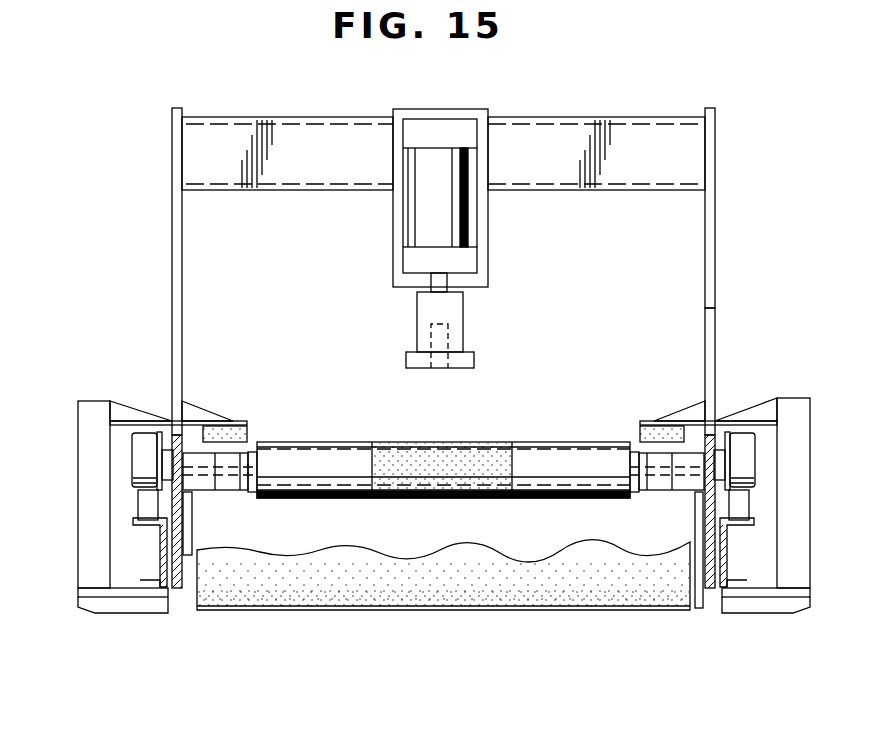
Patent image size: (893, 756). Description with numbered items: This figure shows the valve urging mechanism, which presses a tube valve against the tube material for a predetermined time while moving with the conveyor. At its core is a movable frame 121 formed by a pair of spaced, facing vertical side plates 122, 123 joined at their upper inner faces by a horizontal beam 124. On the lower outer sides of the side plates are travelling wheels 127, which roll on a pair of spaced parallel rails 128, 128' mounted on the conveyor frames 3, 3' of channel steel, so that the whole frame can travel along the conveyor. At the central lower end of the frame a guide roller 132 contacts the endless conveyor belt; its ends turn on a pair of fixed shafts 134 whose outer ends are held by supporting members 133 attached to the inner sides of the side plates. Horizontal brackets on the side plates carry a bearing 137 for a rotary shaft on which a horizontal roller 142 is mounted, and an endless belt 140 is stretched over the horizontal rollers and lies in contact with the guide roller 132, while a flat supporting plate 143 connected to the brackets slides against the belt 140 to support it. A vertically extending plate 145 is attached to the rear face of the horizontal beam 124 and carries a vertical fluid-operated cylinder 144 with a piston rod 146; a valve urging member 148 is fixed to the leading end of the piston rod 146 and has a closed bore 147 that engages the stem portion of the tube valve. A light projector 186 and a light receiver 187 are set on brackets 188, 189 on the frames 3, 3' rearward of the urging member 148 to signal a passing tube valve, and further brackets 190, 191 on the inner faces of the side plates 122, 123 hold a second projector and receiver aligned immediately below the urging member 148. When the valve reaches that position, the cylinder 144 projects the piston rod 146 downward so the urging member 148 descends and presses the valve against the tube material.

The frame 3 is at (743, 570).
The frame 3' is at (146, 569).
The movable frame 121 is at (716, 213).
The side plate 122 is at (716, 321).
The side plate 123 is at (172, 213).
The horizontal beam 124 is at (573, 117).
The travelling wheel 127 is at (132, 462).
The rail 128 is at (790, 538).
The rail 128' is at (94, 538).
The guide roller 132 is at (595, 545).
The supporting member 133 is at (190, 545).
The fixed shaft 134 is at (697, 557).
The bearing 137 is at (240, 492).
The endless belt 140 is at (392, 442).
The horizontal roller 142 is at (555, 498).
The flat supporting plate 143 is at (633, 447).
The vertical fluid-operated cylinder 144 is at (469, 210).
The vertically extending plate 145 is at (455, 108).
The piston rod 146 is at (447, 278).
The closed bore 147 is at (448, 340).
The valve urging member 148 is at (463, 319).
The light projector 186 is at (645, 426).
The light receiver 187 is at (247, 433).
The bracket 188 is at (765, 398).
The bracket 189 is at (123, 415).
The bracket 190 is at (685, 412).
The bracket 191 is at (202, 412).